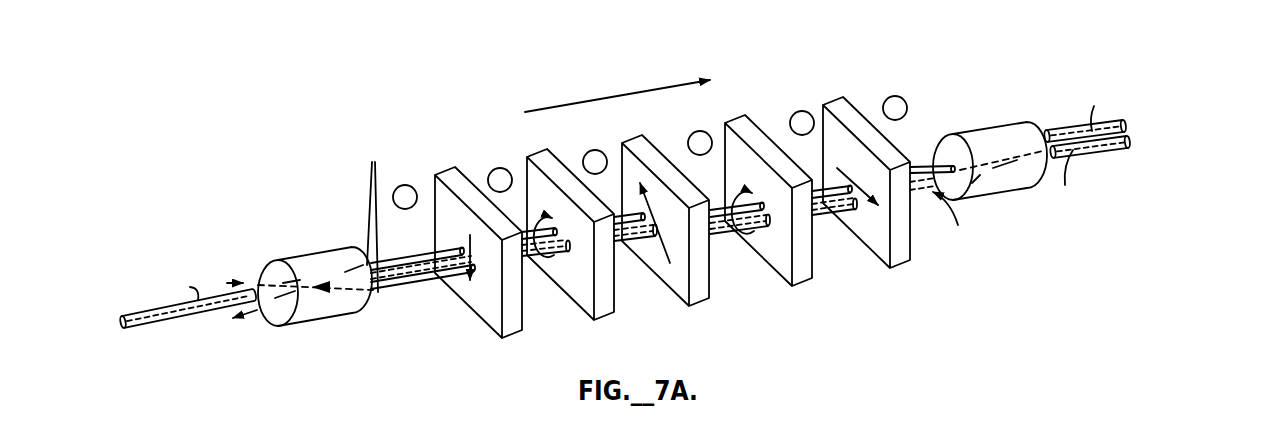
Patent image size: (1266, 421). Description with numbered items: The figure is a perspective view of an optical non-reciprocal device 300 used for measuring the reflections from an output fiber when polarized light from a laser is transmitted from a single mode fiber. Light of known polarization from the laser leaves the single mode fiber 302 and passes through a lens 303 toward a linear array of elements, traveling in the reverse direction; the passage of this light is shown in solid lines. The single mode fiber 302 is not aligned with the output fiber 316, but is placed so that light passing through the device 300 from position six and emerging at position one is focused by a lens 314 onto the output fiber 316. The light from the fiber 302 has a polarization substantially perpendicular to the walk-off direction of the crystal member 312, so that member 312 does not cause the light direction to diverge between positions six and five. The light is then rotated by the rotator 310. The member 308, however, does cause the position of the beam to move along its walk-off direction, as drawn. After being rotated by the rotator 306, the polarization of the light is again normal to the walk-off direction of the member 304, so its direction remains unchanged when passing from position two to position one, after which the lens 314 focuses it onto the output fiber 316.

The device 300 is at (379, 61).
The single mode fiber 302 is at (1118, 128).
The lens 303 is at (962, 128).
The member 304 is at (488, 323).
The rotator 306 is at (595, 324).
The member 308 is at (703, 305).
The rotator 310 is at (798, 283).
The crystal member 312 is at (893, 265).
The lens 314 is at (297, 326).
The output fiber 316 is at (163, 323).